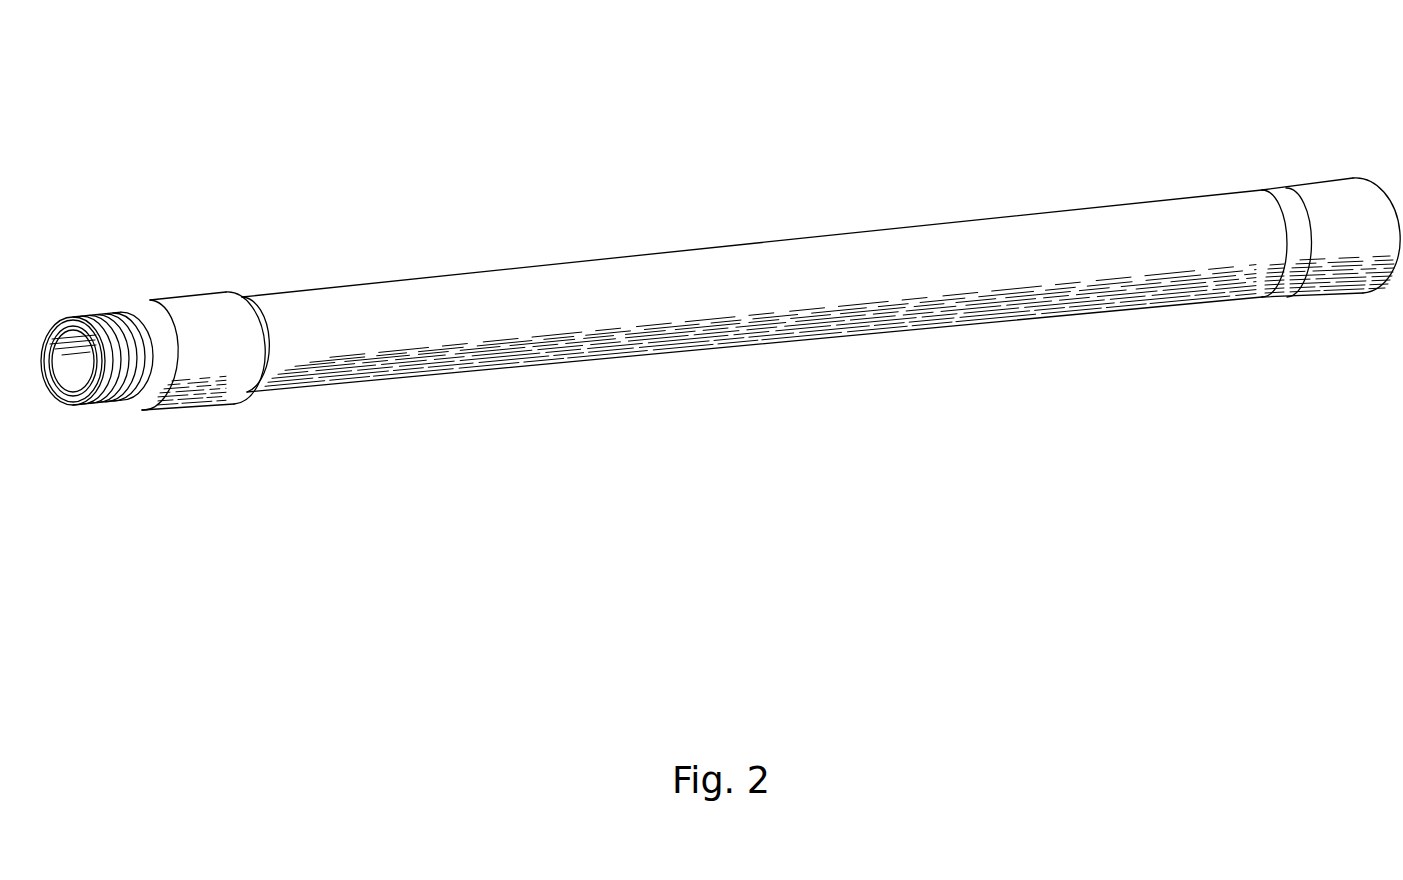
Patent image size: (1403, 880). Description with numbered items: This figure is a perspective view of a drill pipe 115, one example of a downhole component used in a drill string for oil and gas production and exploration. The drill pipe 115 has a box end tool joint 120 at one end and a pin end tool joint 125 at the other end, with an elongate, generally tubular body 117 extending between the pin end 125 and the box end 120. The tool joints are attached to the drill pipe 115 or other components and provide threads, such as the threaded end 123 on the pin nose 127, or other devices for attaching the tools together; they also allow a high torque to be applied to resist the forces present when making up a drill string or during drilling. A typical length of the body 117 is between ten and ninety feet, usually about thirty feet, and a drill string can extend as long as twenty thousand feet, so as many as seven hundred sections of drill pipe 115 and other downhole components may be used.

The drill pipe 115 is at (735, 133).
The elongate, generally tubular body 117 is at (1247, 303).
The box end tool joint 120 is at (1300, 110).
The threaded end 123 is at (150, 410).
The pin end tool joint 125 is at (191, 222).
The pin nose 127 is at (74, 222).